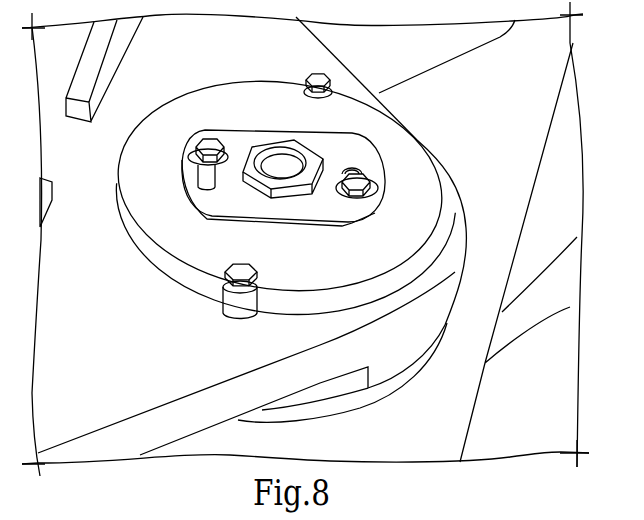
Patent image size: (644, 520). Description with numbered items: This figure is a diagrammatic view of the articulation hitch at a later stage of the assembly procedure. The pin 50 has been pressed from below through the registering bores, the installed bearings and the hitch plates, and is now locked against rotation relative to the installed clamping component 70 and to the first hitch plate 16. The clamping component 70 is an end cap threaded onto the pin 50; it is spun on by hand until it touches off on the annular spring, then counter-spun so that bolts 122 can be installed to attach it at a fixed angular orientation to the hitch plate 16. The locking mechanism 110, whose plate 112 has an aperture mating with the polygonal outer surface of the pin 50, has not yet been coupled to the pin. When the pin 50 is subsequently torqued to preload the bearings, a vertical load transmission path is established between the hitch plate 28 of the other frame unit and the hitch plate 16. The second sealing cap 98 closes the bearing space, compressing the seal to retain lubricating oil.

The first hitch plate 16 is at (339, 52).
The hitch plate 28 is at (430, 82).
The pin 50 is at (267, 145).
The first clamping component 70 is at (151, 266).
The second sealing cap 98 is at (345, 410).
The locking mechanism 110 is at (199, 220).
The plate 112 is at (265, 202).
The bolts 122 is at (243, 266).